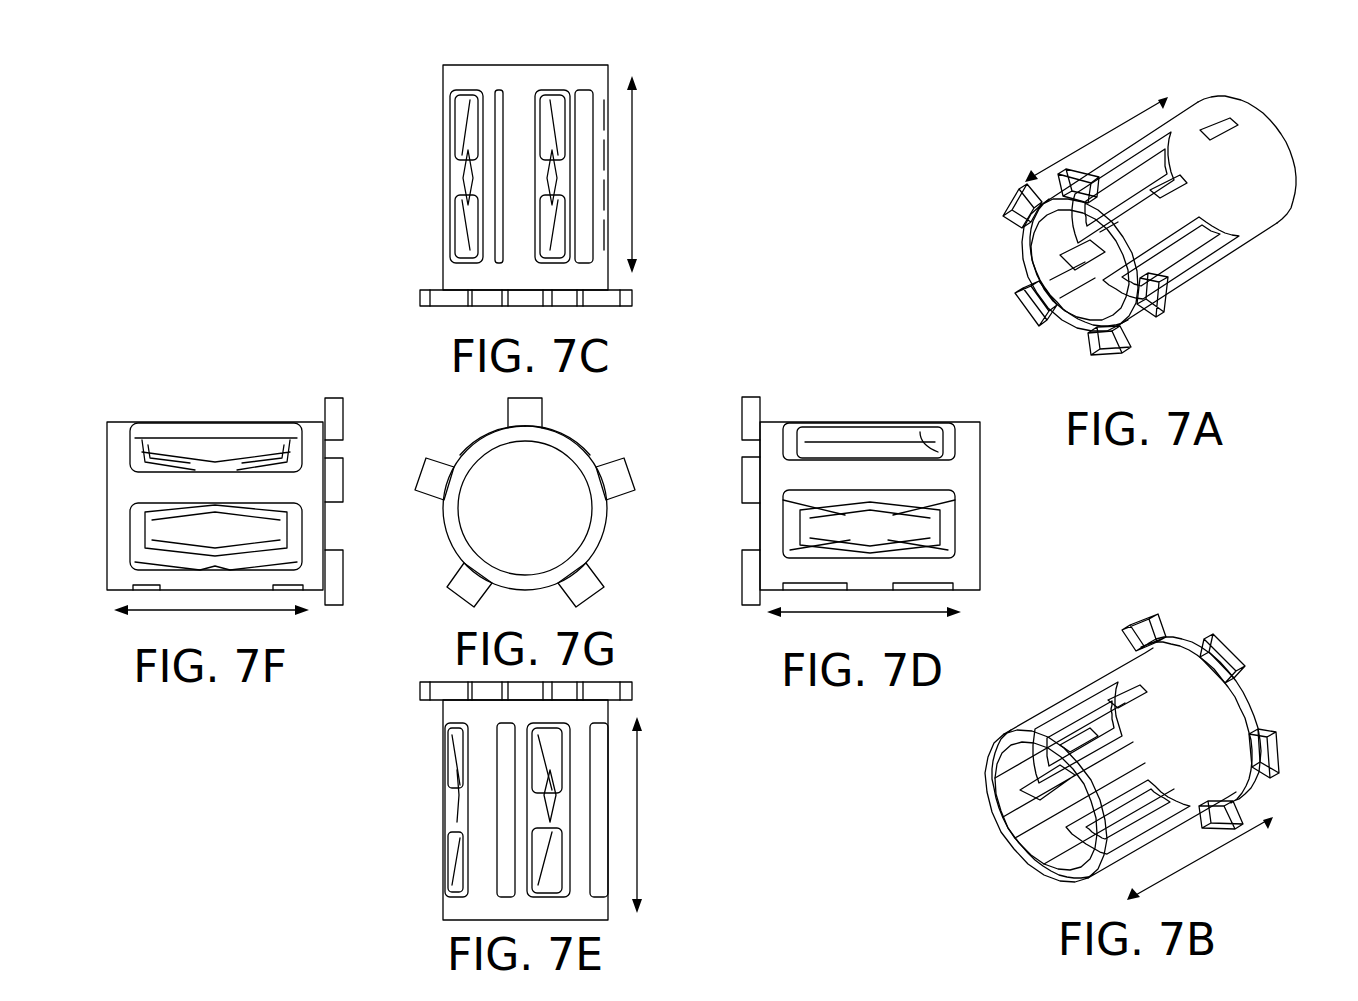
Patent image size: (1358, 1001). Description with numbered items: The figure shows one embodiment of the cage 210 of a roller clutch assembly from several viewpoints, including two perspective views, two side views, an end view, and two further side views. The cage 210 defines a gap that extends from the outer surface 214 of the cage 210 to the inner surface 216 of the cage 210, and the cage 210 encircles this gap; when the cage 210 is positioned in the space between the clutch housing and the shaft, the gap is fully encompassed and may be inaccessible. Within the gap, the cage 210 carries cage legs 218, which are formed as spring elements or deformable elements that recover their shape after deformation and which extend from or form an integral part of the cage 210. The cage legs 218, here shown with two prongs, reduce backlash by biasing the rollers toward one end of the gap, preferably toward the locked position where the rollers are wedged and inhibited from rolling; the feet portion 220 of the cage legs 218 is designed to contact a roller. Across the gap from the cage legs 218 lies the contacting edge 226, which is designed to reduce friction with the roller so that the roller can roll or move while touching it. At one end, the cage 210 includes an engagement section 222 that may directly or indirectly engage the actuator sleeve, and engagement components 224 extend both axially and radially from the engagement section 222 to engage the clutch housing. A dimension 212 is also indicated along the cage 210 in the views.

In FIG. 7C, the cage 210 is at (430, 103).
In FIG. 7E, the cage 210 is at (442, 934).
In FIG. 7F, the cage 210 is at (94, 438).
In FIG. 7G, the cage 210 is at (602, 548).
In FIG. 7D, the cage 210 is at (985, 520).
In FIG. 7A, the cage 210 is at (1258, 125).
In FIG. 7B, the cage 210 is at (986, 816).
In FIG. 7C, the length of contact body 212 is at (633, 178).
In FIG. 7E, the length of contact body 212 is at (638, 815).
In FIG. 7F, the length of contact body 212 is at (215, 612).
In FIG. 7D, the length of contact body 212 is at (870, 612).
In FIG. 7A, the length of contact body 212 is at (1105, 138).
In FIG. 7B, the length of contact body 212 is at (1205, 855).
In FIG. 7C, the outer surface 214 is at (508, 92).
In FIG. 7E, the outer surface 214 is at (583, 910).
In FIG. 7F, the outer surface 214 is at (115, 555).
In FIG. 7G, the outer surface 214 is at (478, 435).
In FIG. 7D, the outer surface 214 is at (770, 478).
In FIG. 7A, the outer surface 214 is at (1160, 150).
In FIG. 7B, the outer surface 214 is at (1075, 755).
In FIG. 7G, the inner surface 216 is at (590, 518).
In FIG. 7A, the inner surface 216 is at (1032, 280).
In FIG. 7B, the inner surface 216 is at (1035, 842).
In FIG. 7C, the cage legs 218 is at (457, 213).
In FIG. 7E, the cage legs 218 is at (455, 770).
In FIG. 7F, the cage legs 218 is at (255, 455).
In FIG. 7D, the cage legs 218 is at (900, 435).
In FIG. 7A, the cage legs 218 is at (1175, 210).
In FIG. 7B, the cage legs 218 is at (1145, 680).
In FIG. 7C, the feet portion 220 is at (465, 246).
In FIG. 7E, the feet portion 220 is at (445, 745).
In FIG. 7F, the feet portion 220 is at (155, 440).
In FIG. 7D, the feet portion 220 is at (937, 430).
In FIG. 7A, the feet portion 220 is at (1235, 147).
In FIG. 7B, the feet portion 220 is at (1072, 725).
In FIG. 7C, the engagement section 222 is at (515, 280).
In FIG. 7E, the engagement section 222 is at (555, 710).
In FIG. 7F, the engagement section 222 is at (320, 475).
In FIG. 7G, the engagement section 222 is at (578, 447).
In FIG. 7D, the engagement section 222 is at (735, 390).
In FIG. 7A, the engagement section 222 is at (1022, 258).
In FIG. 7B, the engagement section 222 is at (1190, 650).
In FIG. 7C, the engagement component 224 is at (575, 300).
In FIG. 7E, the engagement component 224 is at (425, 690).
In FIG. 7F, the engagement component 224 is at (342, 413).
In FIG. 7G, the engagement component 224 is at (535, 410).
In FIG. 7D, the engagement component 224 is at (748, 420).
In FIG. 7A, the engagement component 224 is at (1100, 358).
In FIG. 7B, the engagement component 224 is at (1153, 630).
In FIG. 7C, the contacting edge 226 is at (505, 177).
In FIG. 7E, the contacting edge 226 is at (495, 818).
In FIG. 7F, the contacting edge 226 is at (218, 505).
In FIG. 7D, the contacting edge 226 is at (860, 455).
In FIG. 7A, the contacting edge 226 is at (1220, 235).
In FIG. 7B, the contacting edge 226 is at (1190, 735).